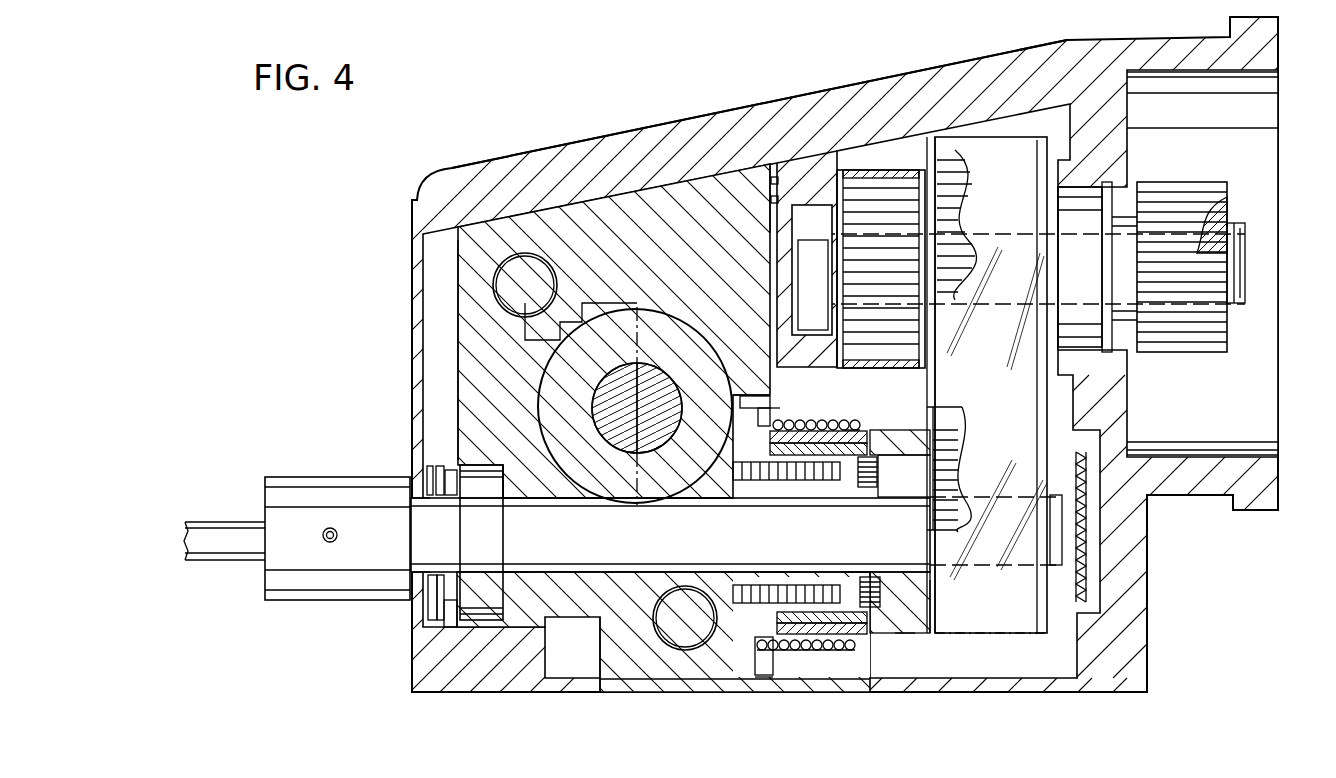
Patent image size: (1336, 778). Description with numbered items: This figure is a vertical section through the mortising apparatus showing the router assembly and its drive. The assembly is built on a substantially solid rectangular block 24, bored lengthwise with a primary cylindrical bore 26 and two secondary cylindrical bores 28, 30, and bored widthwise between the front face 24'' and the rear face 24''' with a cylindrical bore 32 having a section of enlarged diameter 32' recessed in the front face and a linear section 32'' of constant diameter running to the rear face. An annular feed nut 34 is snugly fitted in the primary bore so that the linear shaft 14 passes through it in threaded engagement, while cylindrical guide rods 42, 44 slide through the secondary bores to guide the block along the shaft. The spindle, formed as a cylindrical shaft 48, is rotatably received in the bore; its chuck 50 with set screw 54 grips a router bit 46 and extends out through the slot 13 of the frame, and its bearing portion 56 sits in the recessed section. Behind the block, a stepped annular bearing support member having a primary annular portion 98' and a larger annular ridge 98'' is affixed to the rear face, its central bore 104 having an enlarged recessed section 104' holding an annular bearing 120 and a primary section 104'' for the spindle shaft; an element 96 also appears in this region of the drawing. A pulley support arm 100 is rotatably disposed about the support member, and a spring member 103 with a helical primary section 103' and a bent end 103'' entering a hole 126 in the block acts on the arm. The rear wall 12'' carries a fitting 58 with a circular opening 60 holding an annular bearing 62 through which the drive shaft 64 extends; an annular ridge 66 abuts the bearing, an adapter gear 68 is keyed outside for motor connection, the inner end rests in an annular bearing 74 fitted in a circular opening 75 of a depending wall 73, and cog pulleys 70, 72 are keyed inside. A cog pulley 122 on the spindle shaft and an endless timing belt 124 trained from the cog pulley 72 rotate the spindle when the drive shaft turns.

The rear wall 12'' is at (708, 346).
The slot 13 is at (420, 500).
The linear shaft 14 is at (650, 452).
The rectangular block 24 is at (630, 330).
The front face 24'' is at (444, 350).
The rear face 24''' is at (736, 199).
The primary cylindrical bore 26 is at (700, 298).
The secondary cylindrical bore 28 is at (488, 232).
The secondary cylindrical bore 30 is at (610, 640).
The cylindrical bore 32 is at (526, 516).
The section of enlarged diameter 32' is at (493, 460).
The linear section of constant diameter 32'' is at (707, 630).
The annular feed nut 34 is at (586, 388).
The cylindrical guide rod 42 is at (540, 272).
The cylindrical guide rod 44 is at (665, 642).
The router bit 46 is at (262, 520).
The cylindrical shaft 48 is at (594, 543).
The chuck 50 is at (270, 600).
The set screw 54 is at (338, 532).
The bearing portion 56 is at (497, 542).
The fitting 58 is at (1272, 50).
The circular opening 60 is at (1118, 182).
The annular bearing 62 is at (1088, 221).
The drive shaft 64 is at (1245, 260).
The annular ridge 66 is at (1125, 330).
The adapter gear 68 is at (1205, 345).
The cog pulley 70 is at (848, 150).
The cog pulley 72 is at (960, 138).
The wall 73 is at (771, 181).
The annular bearing 74 is at (823, 232).
The circular opening 75 is at (771, 199).
The gear 96 is at (912, 170).
The primary annular portion 98' is at (892, 622).
The annular ridge 98'' is at (945, 626).
The pulley support arm 100 is at (822, 660).
The spring member 103 is at (806, 660).
The primary section 103' is at (816, 416).
The end 103'' is at (791, 389).
The central bore 104 is at (871, 549).
The section of enlarged diameter 104' is at (991, 652).
The primary section 104'' is at (770, 550).
The annular bearing 120 is at (912, 489).
The cog pulley 122 is at (958, 436).
The endless timing belt 124 is at (1018, 361).
The hole 126 is at (745, 396).